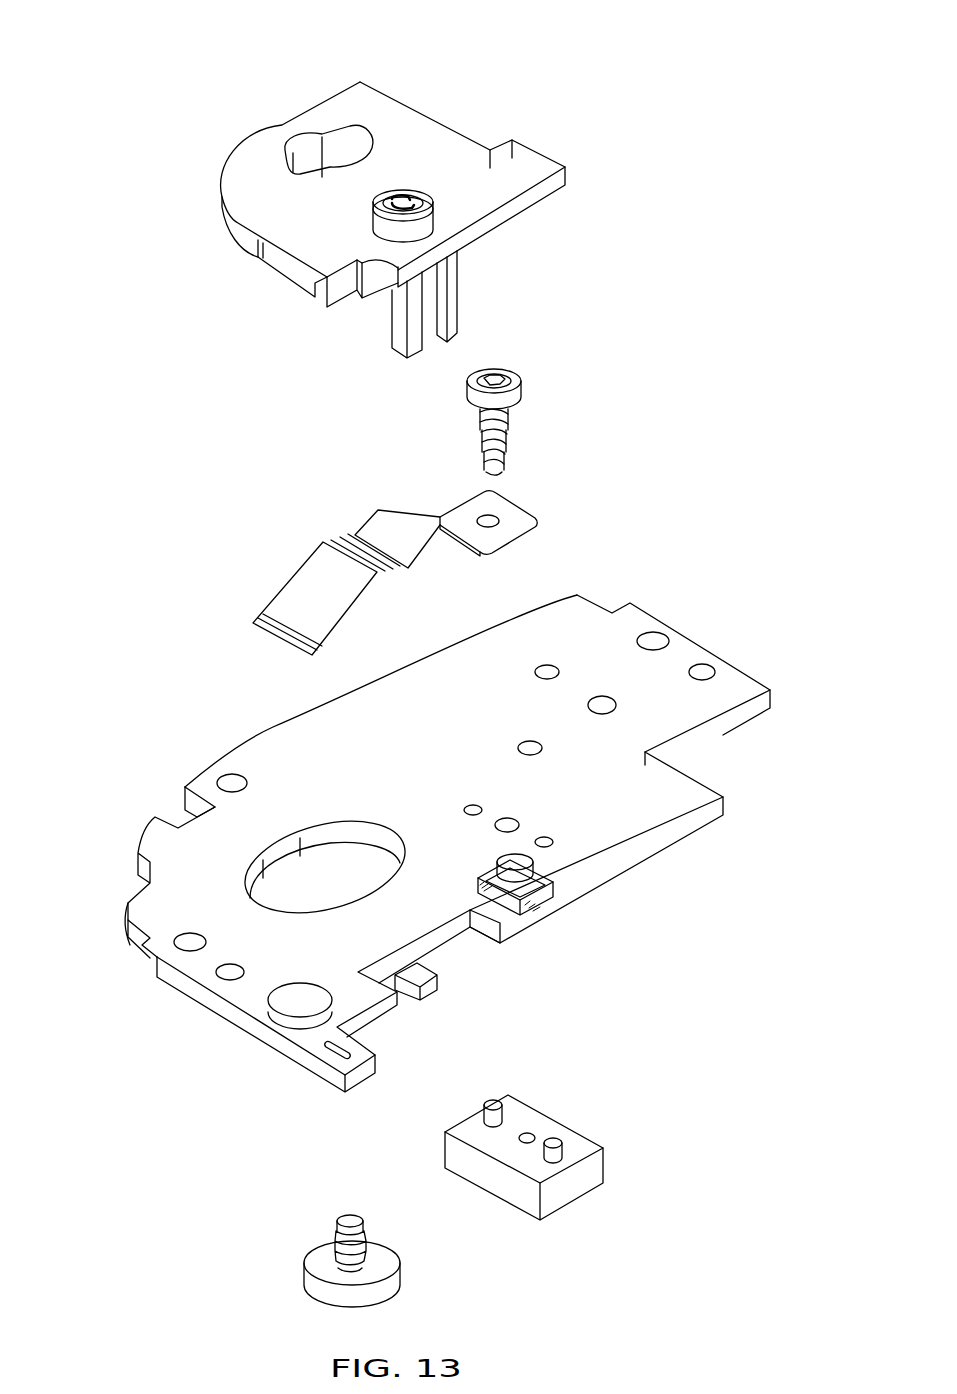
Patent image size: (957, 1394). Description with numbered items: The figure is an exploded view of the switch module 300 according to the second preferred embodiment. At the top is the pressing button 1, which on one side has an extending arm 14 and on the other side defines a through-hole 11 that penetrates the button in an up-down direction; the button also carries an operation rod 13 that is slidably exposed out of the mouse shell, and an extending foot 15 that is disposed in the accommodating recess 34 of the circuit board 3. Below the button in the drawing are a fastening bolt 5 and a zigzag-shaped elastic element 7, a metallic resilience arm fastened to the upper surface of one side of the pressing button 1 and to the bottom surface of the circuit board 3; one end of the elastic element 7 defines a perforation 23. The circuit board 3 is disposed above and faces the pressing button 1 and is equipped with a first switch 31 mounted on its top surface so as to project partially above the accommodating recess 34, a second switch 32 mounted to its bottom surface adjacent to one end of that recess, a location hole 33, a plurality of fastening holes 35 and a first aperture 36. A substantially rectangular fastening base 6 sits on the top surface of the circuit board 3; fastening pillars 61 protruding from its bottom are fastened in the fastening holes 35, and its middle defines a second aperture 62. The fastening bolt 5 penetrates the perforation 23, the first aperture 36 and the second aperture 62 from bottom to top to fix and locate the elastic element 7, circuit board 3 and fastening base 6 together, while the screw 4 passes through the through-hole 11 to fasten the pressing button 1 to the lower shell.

The switch module 300 is at (90, 30).
The pressing button 1 is at (476, 123).
The through-hole 11 is at (335, 148).
The operation rod 13 is at (440, 230).
The extending arm 14 is at (520, 162).
The extending foot 15 is at (400, 333).
The fastening bolt 5 is at (527, 413).
The elastic element 7 is at (545, 498).
The perforation 23 is at (497, 522).
The circuit board 3 is at (708, 633).
The first switch 31 is at (420, 978).
The second switch 32 is at (522, 890).
The location hole 33 is at (290, 880).
The accommodating recess 34 is at (470, 937).
The fastening holes 35 is at (548, 846).
The first aperture 36 is at (515, 820).
The fastening base 6 is at (612, 1133).
The fastening pillars 61 is at (485, 1112).
The second aperture 62 is at (522, 1141).
The screw 4 is at (300, 1278).